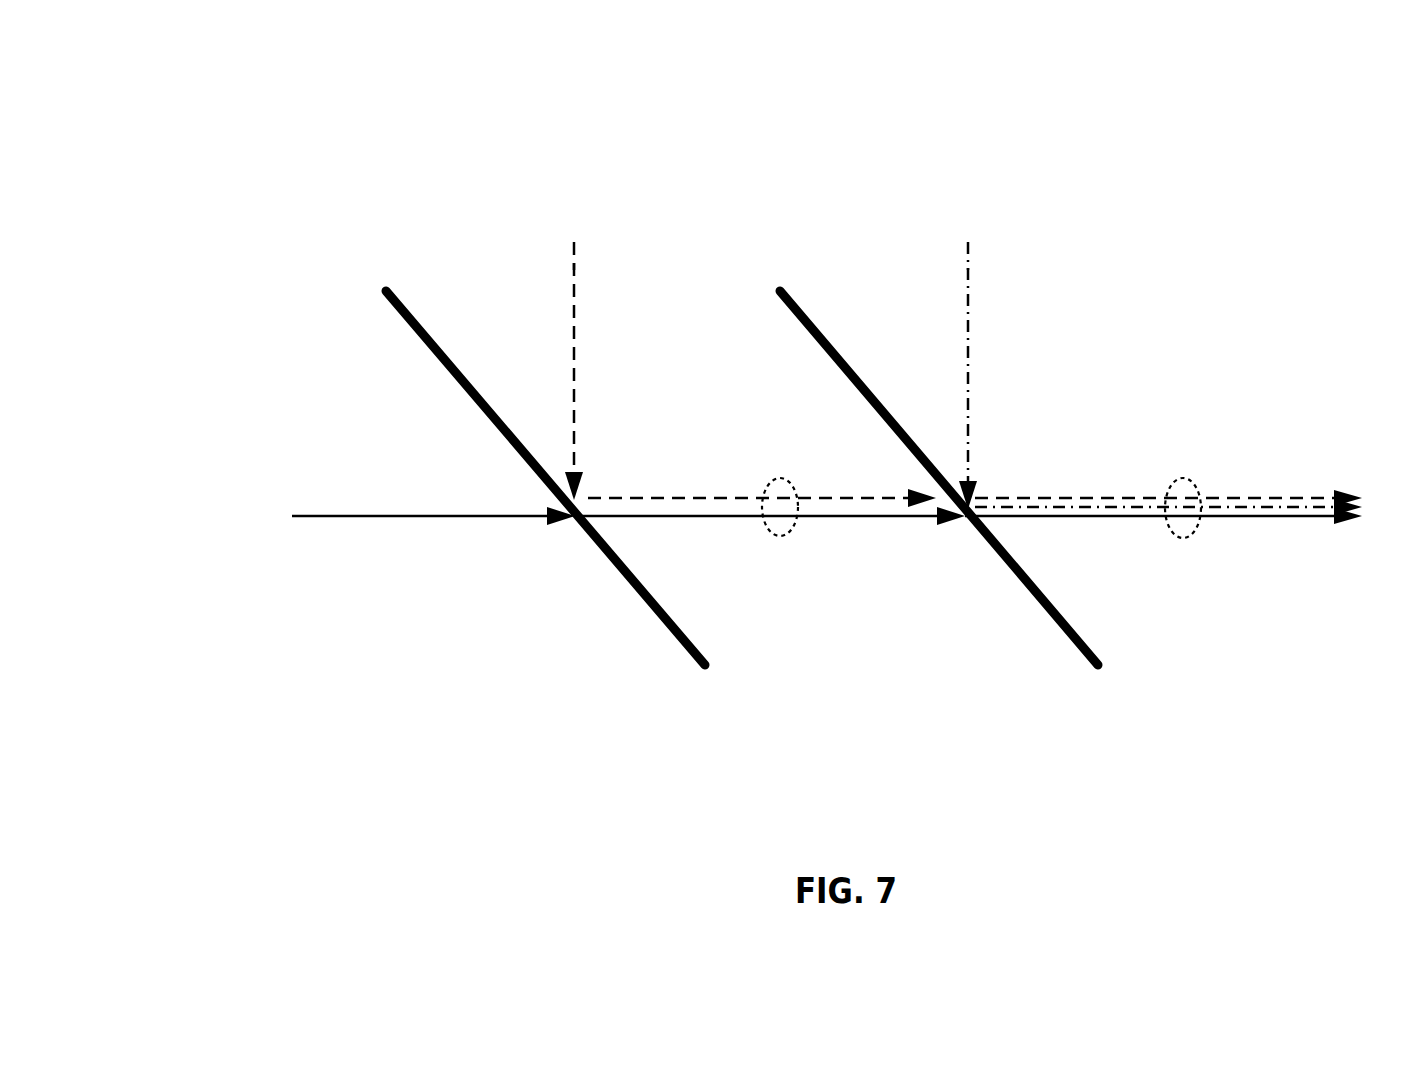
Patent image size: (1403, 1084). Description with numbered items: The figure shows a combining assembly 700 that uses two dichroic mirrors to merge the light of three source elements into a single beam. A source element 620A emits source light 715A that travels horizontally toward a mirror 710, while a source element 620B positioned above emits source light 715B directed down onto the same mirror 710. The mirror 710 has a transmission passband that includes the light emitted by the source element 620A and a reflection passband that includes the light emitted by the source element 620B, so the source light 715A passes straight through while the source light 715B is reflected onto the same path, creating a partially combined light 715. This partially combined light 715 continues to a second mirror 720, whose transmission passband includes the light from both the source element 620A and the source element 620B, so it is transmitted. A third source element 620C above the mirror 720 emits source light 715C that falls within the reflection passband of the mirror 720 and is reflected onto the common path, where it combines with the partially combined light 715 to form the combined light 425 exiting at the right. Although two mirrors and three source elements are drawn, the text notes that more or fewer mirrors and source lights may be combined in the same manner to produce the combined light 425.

The combining assembly 700 is at (751, 443).
The source element 620A is at (262, 523).
The source element 620B is at (565, 204).
The source element 620C is at (967, 204).
The source light 715A is at (490, 517).
The source light 715B is at (667, 363).
The source light 715C is at (1058, 307).
The mirror 710 is at (642, 600).
The mirror 720 is at (1173, 630).
The partially combined light 715 is at (807, 613).
The combined light 425 is at (1247, 345).